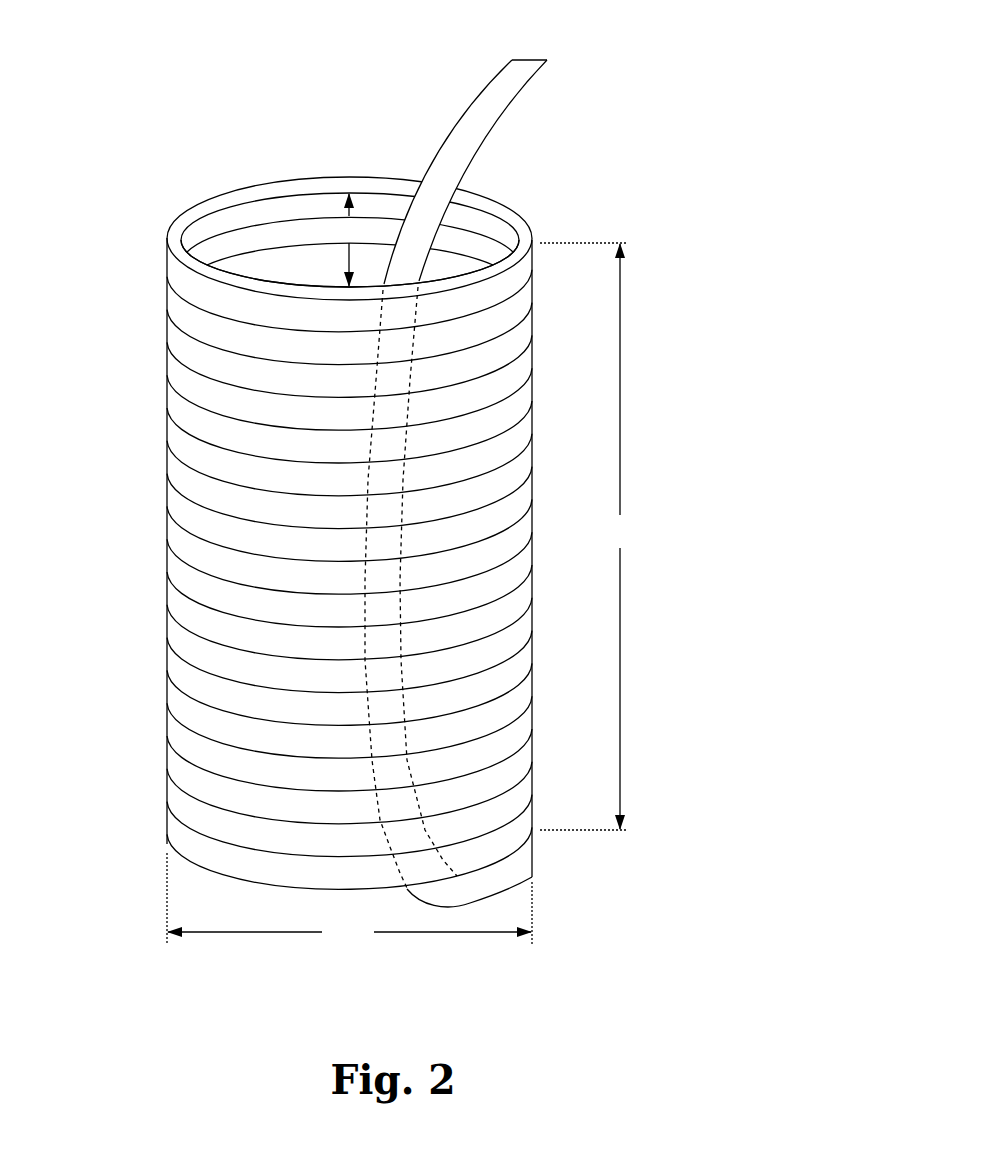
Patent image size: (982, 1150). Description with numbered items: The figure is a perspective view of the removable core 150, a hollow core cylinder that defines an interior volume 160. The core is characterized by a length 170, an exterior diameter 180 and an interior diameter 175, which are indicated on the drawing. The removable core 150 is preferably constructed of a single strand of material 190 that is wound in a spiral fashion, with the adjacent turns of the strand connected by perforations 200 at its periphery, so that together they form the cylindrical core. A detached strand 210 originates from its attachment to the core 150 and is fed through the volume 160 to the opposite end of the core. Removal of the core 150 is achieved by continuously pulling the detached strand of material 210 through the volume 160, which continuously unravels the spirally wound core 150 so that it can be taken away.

The removable core 150 is at (136, 256).
The volume 160 is at (452, 237).
The length 170 is at (587, 536).
The interior diameter 175 is at (351, 240).
The exterior diameter 180 is at (349, 899).
The single strand of material 190 is at (209, 327).
The perforations 200 is at (208, 721).
The detached strand 210 is at (539, 48).